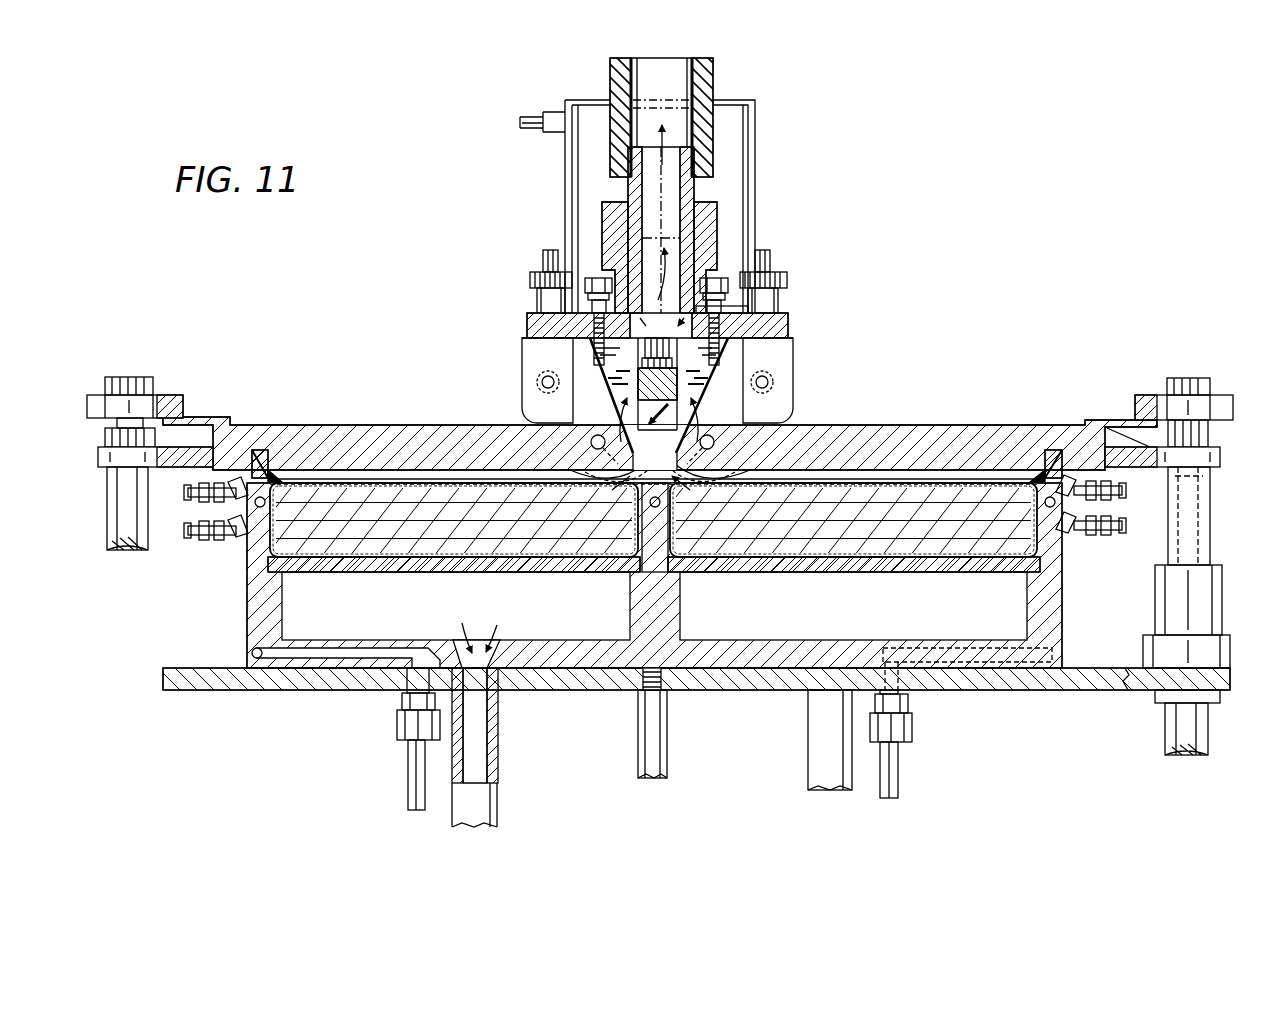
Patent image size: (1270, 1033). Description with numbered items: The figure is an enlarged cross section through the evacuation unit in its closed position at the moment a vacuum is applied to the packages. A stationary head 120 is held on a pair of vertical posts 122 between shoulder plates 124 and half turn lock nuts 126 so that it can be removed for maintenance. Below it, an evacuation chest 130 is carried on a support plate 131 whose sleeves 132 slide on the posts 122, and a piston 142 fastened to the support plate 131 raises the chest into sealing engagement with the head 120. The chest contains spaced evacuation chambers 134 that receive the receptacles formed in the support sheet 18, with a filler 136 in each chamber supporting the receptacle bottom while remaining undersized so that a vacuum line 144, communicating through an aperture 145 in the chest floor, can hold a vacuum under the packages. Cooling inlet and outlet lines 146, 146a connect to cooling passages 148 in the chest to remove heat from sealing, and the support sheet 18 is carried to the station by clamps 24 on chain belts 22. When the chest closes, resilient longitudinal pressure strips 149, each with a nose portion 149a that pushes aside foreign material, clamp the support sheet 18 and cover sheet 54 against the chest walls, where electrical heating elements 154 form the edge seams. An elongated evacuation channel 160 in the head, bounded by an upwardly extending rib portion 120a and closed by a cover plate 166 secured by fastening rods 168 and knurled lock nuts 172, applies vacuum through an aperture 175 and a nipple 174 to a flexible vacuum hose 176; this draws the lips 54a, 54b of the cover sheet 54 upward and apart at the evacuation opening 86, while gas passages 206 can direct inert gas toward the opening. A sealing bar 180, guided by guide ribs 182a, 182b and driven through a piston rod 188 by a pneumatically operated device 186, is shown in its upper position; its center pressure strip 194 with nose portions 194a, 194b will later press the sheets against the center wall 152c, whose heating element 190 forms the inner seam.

The support sheet 18 is at (553, 574).
The chain belts 22 is at (190, 540).
The clamps 24 is at (226, 550).
The cover sheet 54 is at (376, 468).
The lip of cover sheet 54a is at (568, 465).
The lip of cover sheet 54b is at (708, 462).
The evacuation opening 86 is at (596, 465).
The head 120 is at (936, 432).
The rib portion 120a is at (778, 366).
The posts 122 is at (108, 516).
The shoulder plates 124 is at (98, 452).
The half turn lock nuts 126 is at (178, 393).
The evacuation chest 130 is at (243, 620).
The support plate 131 is at (294, 690).
The sleeves 132 is at (1155, 600).
The evacuation chambers 134 is at (484, 600).
The filler 136 is at (330, 570).
The piston 142 is at (658, 735).
The vacuum line 144 is at (496, 792).
The aperture 145 is at (498, 637).
The cooling inlet line 146 is at (408, 764).
The cooling outlet line 146a is at (897, 760).
The cooling passages 148 is at (358, 658).
The longitudinal pressure strips 149 is at (258, 450).
The nose portion 149a is at (280, 470).
The center wall 152c is at (653, 512).
The electrical heating elements 154 is at (254, 503).
The evacuation channel 160 is at (756, 430).
The cover plate 166 is at (788, 326).
The fastening rods 168 is at (588, 346).
The knurled lock nuts 172 is at (530, 278).
The nipple 174 is at (690, 283).
The aperture 175 is at (736, 307).
The flexible vacuum hose 176 is at (714, 95).
The sealing bar 180 is at (614, 380).
The guide rib 182a is at (600, 394).
The guide rib 182b is at (790, 383).
The pneumatically operated device 186 is at (752, 165).
The piston rod 188 is at (628, 366).
The heating element 190 is at (640, 578).
The center pressure strip 194 is at (678, 410).
The nose portion 194a is at (634, 414).
The nose portion 194b is at (688, 415).
The gas passages 206 is at (591, 437).